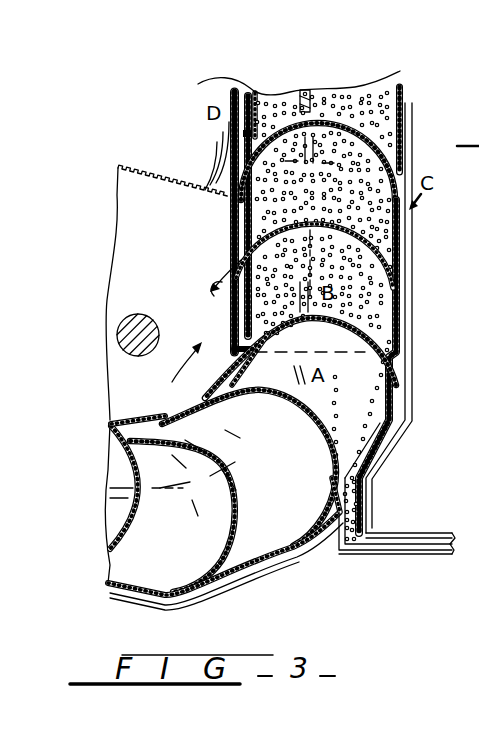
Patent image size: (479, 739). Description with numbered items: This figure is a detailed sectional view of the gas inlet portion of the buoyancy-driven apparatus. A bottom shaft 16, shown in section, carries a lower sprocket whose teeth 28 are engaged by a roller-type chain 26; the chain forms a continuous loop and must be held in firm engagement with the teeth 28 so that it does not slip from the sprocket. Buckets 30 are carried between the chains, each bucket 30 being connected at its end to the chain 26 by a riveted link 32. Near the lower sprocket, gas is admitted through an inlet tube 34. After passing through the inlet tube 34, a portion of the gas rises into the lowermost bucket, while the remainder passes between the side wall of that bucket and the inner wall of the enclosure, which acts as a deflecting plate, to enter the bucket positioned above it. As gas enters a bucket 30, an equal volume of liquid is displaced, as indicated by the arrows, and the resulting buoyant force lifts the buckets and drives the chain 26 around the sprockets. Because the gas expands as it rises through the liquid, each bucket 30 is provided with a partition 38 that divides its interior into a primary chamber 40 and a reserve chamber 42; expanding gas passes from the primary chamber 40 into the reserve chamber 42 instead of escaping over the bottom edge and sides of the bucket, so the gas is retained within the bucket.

The bottom shaft 16 is at (140, 331).
The roller-type chain 26 is at (307, 253).
The sprocket teeth 28 is at (169, 168).
The bucket 30 is at (390, 232).
The riveted link 32 is at (300, 245).
The inlet tube 34 is at (378, 544).
The partition 38 is at (282, 113).
The primary chamber 40 is at (400, 71).
The reserve chamber 42 is at (236, 95).